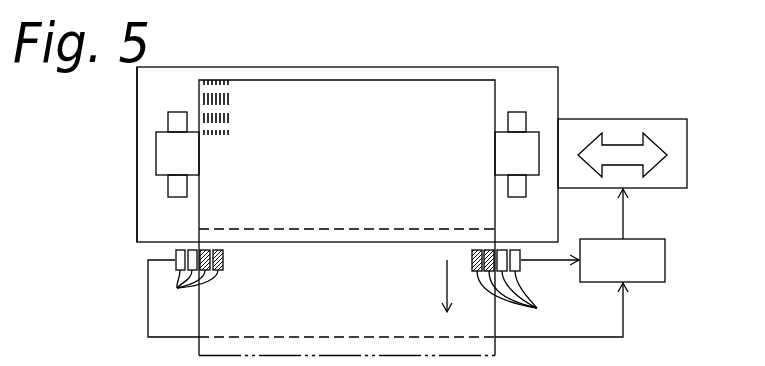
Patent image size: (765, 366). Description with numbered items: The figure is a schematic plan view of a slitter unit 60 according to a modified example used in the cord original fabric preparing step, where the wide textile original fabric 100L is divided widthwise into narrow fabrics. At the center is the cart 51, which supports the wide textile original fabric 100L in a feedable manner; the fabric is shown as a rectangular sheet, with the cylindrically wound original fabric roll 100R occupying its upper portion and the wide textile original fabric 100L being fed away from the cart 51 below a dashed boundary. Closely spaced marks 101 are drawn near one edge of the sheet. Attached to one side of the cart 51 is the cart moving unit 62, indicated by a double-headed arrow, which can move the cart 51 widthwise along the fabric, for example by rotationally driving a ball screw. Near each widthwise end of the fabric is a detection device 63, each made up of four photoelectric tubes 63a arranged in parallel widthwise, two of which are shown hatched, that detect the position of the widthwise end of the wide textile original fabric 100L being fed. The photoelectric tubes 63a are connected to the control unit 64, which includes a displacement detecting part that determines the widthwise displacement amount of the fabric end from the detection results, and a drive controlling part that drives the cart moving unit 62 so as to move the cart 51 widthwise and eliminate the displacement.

The slitter unit 60 is at (104, 166).
The cart 51 is at (137, 183).
The perforations 101 is at (231, 118).
The original fabric roll 100R is at (373, 172).
The wide textile original fabric 100L is at (377, 306).
The cart moving unit 62 is at (613, 119).
The detection device 63 is at (169, 253).
The photoelectric tubes 63a is at (357, 304).
The control unit 64 is at (635, 272).